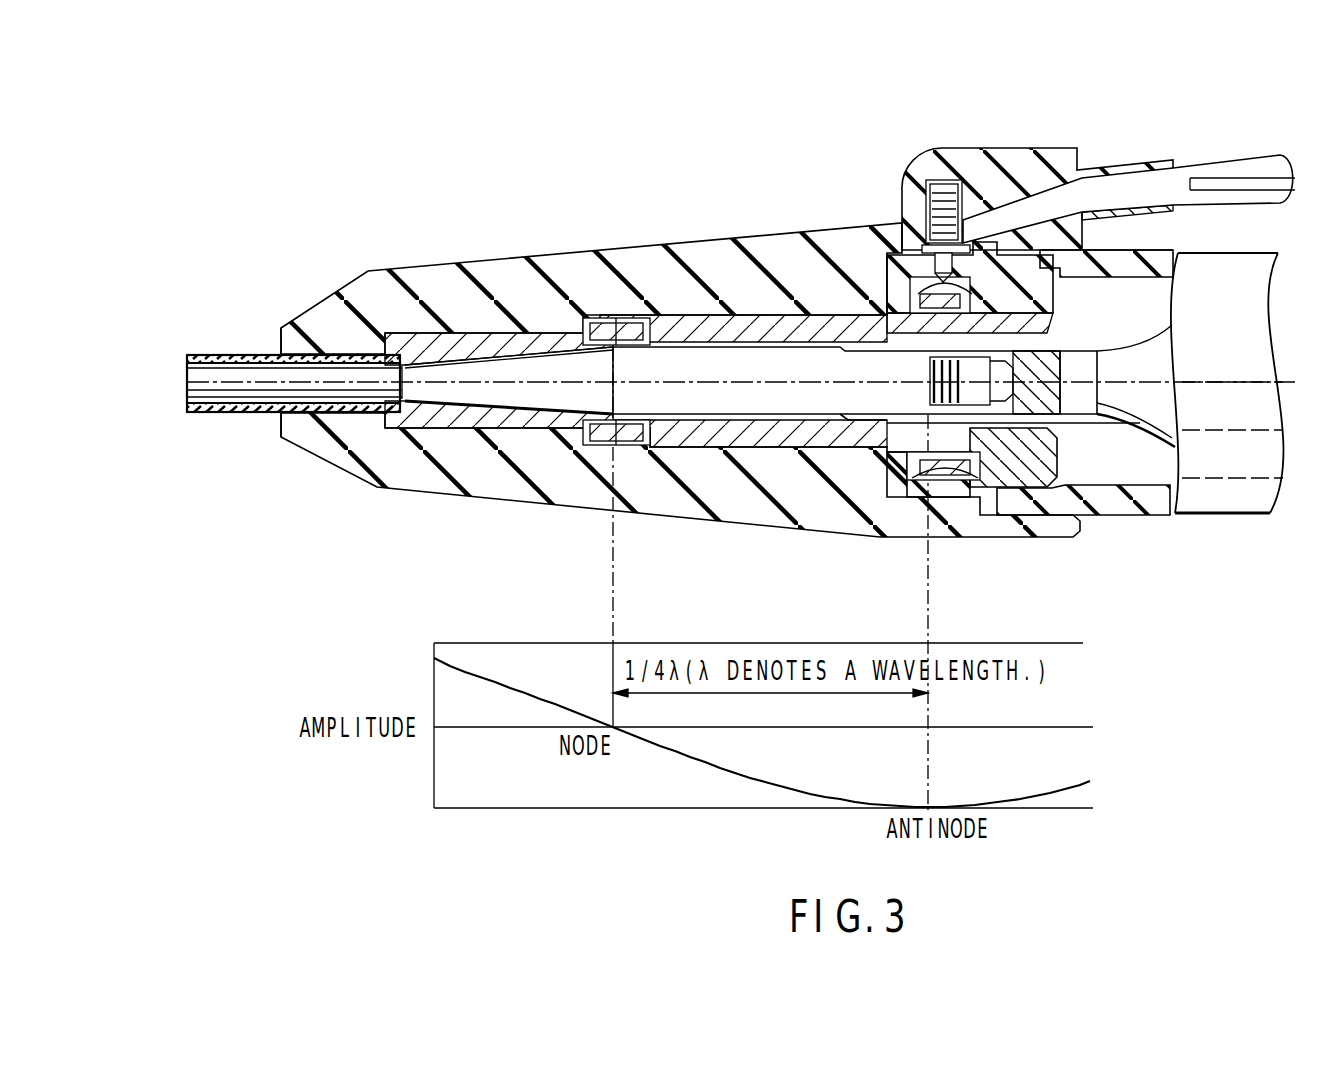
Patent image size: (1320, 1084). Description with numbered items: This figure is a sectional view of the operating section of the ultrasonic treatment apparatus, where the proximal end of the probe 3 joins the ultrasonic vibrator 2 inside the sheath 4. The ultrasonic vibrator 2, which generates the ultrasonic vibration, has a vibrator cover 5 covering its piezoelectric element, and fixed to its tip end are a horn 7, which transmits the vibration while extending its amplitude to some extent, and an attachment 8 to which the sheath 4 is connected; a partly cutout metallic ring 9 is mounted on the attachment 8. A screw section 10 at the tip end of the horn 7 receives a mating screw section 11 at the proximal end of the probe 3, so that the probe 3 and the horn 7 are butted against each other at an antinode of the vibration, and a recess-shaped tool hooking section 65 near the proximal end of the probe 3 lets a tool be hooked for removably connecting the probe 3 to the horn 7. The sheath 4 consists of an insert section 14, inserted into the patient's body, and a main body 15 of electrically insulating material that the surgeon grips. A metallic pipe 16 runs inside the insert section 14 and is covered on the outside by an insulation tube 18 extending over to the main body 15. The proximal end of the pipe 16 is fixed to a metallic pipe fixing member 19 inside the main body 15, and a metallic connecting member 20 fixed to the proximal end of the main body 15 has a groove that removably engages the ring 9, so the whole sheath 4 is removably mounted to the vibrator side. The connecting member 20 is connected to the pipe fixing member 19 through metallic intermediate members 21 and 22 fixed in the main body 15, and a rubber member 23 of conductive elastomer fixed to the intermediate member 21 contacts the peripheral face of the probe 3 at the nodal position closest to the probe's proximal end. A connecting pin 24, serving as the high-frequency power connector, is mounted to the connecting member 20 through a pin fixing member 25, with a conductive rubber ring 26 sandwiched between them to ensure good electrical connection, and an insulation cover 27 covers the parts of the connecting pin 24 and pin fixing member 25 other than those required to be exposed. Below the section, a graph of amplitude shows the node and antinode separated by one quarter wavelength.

The ultrasonic vibrator 2 is at (1195, 515).
The probe 3 is at (312, 392).
The sheath 4 is at (322, 284).
The vibrator cover 5 is at (1130, 516).
The horn 7 is at (1148, 420).
The attachment 8 is at (1050, 298).
The ring 9 is at (943, 480).
The screw section 10 is at (1013, 393).
The screw section 11 is at (940, 377).
The insert section 14 is at (210, 354).
The main body 15 is at (510, 278).
The pipe 16 is at (262, 355).
The insulation tube 18 is at (210, 413).
The pipe fixing member 19 is at (427, 430).
The connecting member 20 is at (908, 480).
The intermediate member 21 is at (583, 446).
The intermediate member 22 is at (767, 442).
The rubber member 23 is at (630, 446).
The connecting pin 24 is at (1230, 158).
The pin fixing member 25 is at (932, 194).
The rubber ring 26 is at (908, 257).
The insulation cover 27 is at (998, 148).
The tool hooking section 65 is at (857, 420).